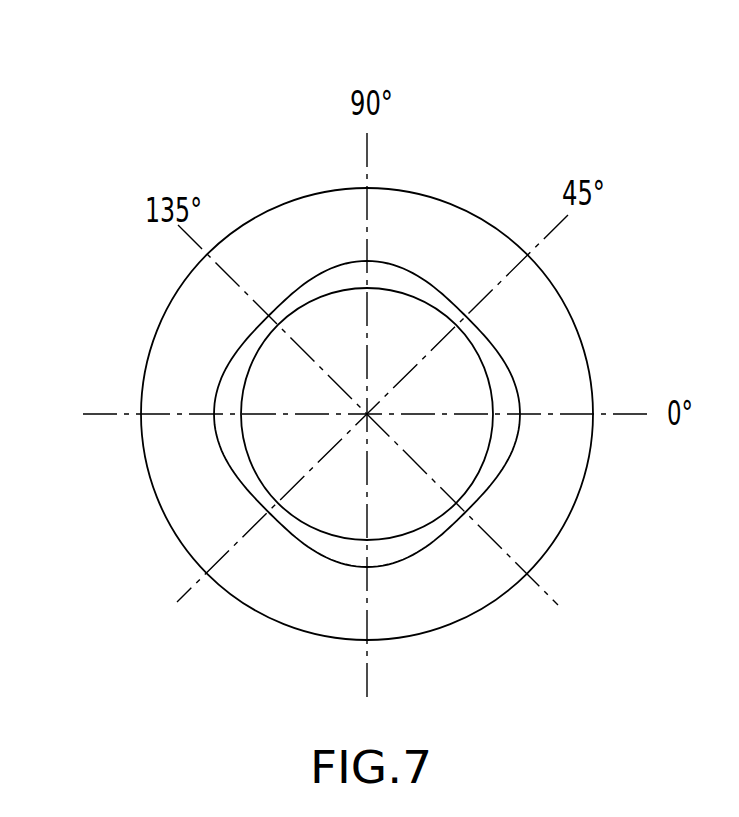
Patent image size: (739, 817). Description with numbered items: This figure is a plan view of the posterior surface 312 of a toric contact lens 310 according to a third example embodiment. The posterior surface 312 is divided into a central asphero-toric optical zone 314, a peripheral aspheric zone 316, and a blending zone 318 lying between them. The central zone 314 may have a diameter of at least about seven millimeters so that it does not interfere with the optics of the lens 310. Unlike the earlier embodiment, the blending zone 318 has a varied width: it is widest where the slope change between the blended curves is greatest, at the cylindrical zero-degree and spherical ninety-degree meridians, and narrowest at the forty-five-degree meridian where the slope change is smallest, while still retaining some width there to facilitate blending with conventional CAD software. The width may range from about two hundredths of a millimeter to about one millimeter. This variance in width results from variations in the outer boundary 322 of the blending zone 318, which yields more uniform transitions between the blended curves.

The toric contact lens 310 is at (166, 112).
The posterior surface 312 is at (166, 380).
The central asphero-toric optical zone 314 is at (462, 392).
The peripheral aspheric zone 316 is at (200, 487).
The blending zone 318 is at (515, 477).
The outer boundary 322 is at (487, 492).